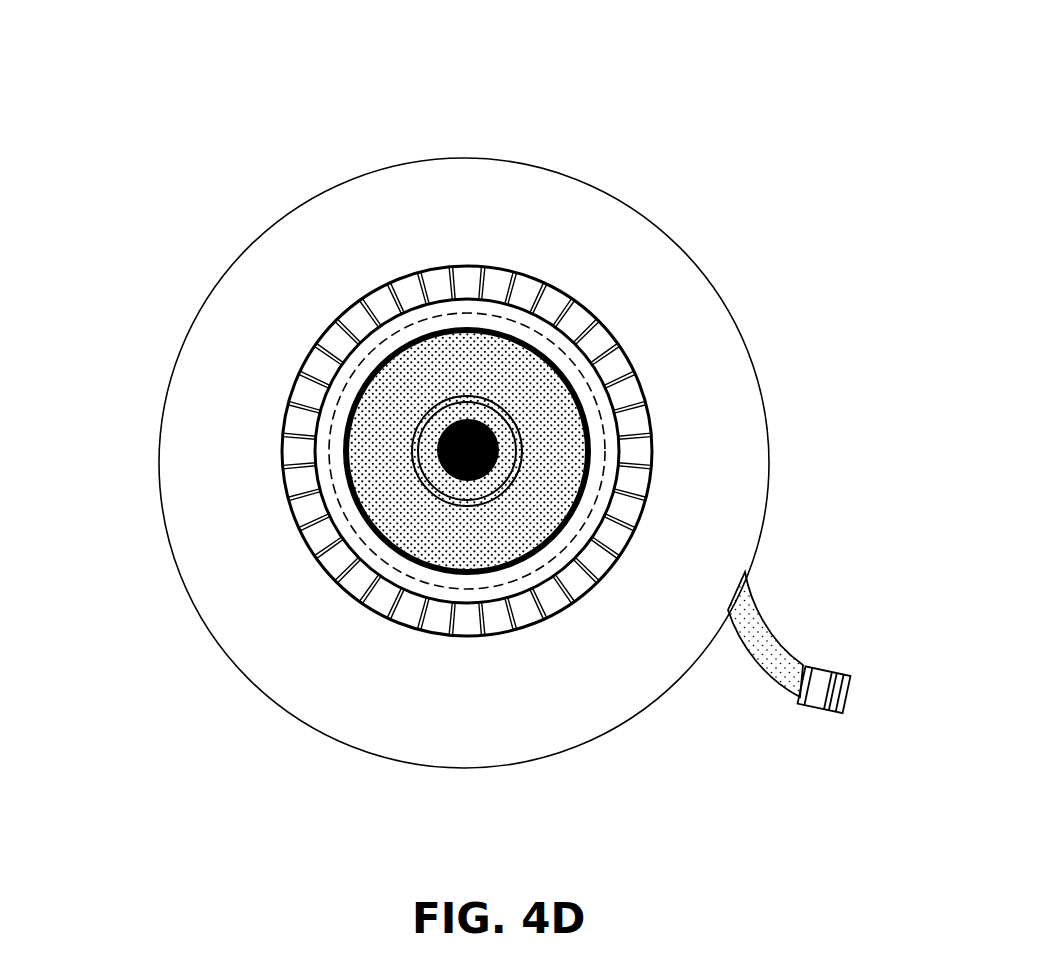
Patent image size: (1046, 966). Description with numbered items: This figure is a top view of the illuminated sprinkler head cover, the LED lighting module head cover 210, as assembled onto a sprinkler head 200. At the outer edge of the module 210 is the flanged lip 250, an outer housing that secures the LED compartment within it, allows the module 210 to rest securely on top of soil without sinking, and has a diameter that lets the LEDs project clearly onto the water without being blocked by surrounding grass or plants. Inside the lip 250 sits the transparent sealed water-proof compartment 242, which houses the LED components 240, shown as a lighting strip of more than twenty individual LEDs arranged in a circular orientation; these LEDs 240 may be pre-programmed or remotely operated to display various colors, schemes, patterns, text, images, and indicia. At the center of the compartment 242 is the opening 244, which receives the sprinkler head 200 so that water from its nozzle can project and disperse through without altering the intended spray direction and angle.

The LED lighting module head cover 210 is at (451, 425).
The flanged lip 250 is at (418, 178).
The LED components 240 is at (470, 285).
The transparent sealed water-proof compartment 242 is at (525, 332).
The sprinkler head 200 is at (537, 417).
The opening 244 is at (458, 500).